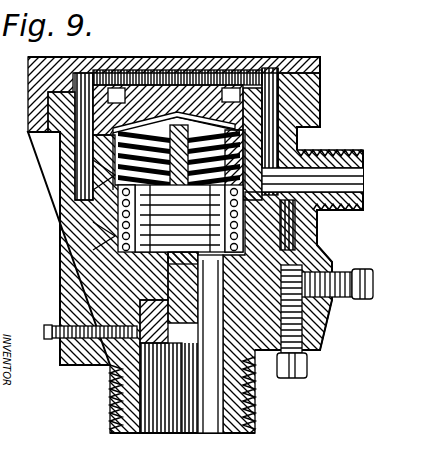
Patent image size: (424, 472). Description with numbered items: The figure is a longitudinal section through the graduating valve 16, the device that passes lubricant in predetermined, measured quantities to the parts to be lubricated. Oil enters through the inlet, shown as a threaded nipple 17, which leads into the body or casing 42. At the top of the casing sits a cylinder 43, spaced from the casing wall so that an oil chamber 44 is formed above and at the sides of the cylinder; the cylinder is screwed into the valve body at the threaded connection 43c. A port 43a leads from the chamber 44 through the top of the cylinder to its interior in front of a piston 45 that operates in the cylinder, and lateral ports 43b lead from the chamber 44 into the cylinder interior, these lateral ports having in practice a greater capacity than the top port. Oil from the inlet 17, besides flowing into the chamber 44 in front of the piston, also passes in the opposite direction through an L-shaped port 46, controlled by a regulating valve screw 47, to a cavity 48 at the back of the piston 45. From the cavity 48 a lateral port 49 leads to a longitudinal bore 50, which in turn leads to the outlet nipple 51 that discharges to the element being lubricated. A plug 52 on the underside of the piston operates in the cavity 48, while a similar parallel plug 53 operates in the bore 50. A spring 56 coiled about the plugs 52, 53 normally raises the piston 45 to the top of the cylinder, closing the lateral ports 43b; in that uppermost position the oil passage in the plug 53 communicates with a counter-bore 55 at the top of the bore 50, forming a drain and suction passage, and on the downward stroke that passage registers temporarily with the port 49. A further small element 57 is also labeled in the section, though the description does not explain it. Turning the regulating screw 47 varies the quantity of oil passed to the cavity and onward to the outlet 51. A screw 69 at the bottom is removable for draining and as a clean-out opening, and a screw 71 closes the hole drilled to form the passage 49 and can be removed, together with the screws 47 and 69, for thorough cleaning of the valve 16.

The graduating valve 16 is at (302, 58).
The threaded nipple inlet 17 is at (330, 173).
The body or casing 42 is at (98, 172).
The cylinder 43 is at (82, 186).
The port 43a is at (180, 98).
The lateral ports 43b is at (75, 128).
The screw connection of cylinder 43c is at (112, 238).
The oil chamber 44 is at (238, 62).
The piston 45 is at (118, 149).
The L-shaped port 46 is at (300, 263).
The regulating valve screw 47 is at (373, 276).
The cavity 48 is at (210, 340).
The lateral port 49 is at (162, 345).
The longitudinal bore 50 is at (135, 360).
The outlet nipple 51 is at (244, 410).
The plug 52 is at (312, 226).
The plug 53 is at (145, 268).
The counter-bore 55 is at (170, 300).
The spring 56 is at (125, 218).
The valve seat 57 is at (211, 302).
The screw 69 is at (307, 368).
The screw 71 is at (47, 340).